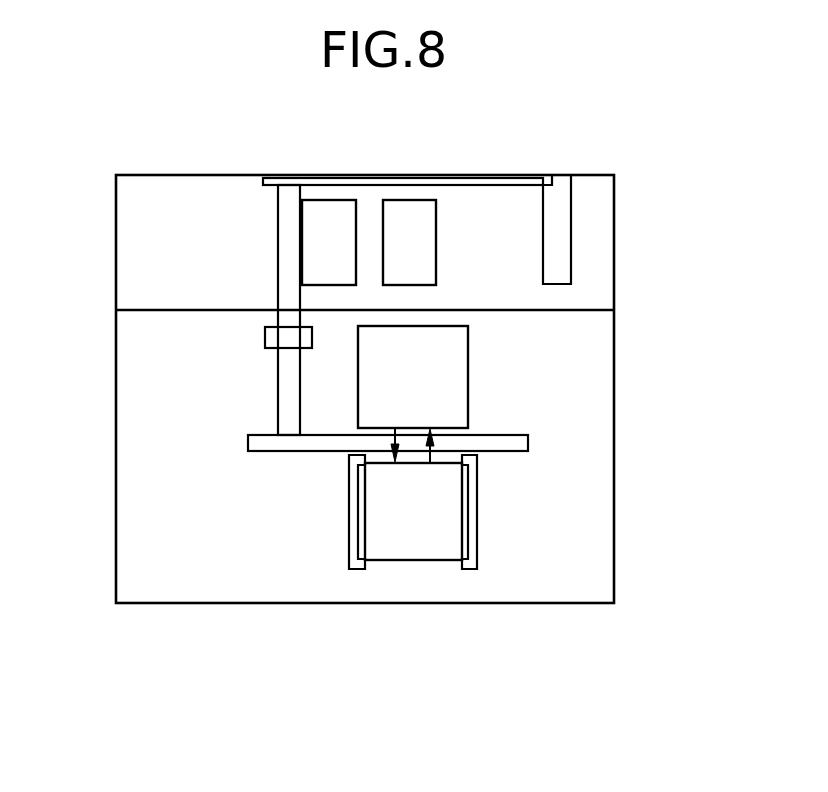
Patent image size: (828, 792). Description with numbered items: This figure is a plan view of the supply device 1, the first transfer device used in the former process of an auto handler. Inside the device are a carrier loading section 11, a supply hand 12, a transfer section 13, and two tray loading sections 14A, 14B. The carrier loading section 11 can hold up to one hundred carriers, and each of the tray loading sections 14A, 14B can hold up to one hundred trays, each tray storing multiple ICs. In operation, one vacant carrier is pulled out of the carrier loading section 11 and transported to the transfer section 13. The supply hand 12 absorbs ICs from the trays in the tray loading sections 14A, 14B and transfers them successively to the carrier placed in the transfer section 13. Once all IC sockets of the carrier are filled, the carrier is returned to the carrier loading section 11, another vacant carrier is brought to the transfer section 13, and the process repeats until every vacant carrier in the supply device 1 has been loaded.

The supply device 1 is at (193, 603).
The carrier loading section 11 is at (410, 560).
The supply hand 12 is at (265, 338).
The transfer section 13 is at (470, 370).
The tray loading section 14A is at (328, 200).
The tray loading section 14B is at (407, 200).